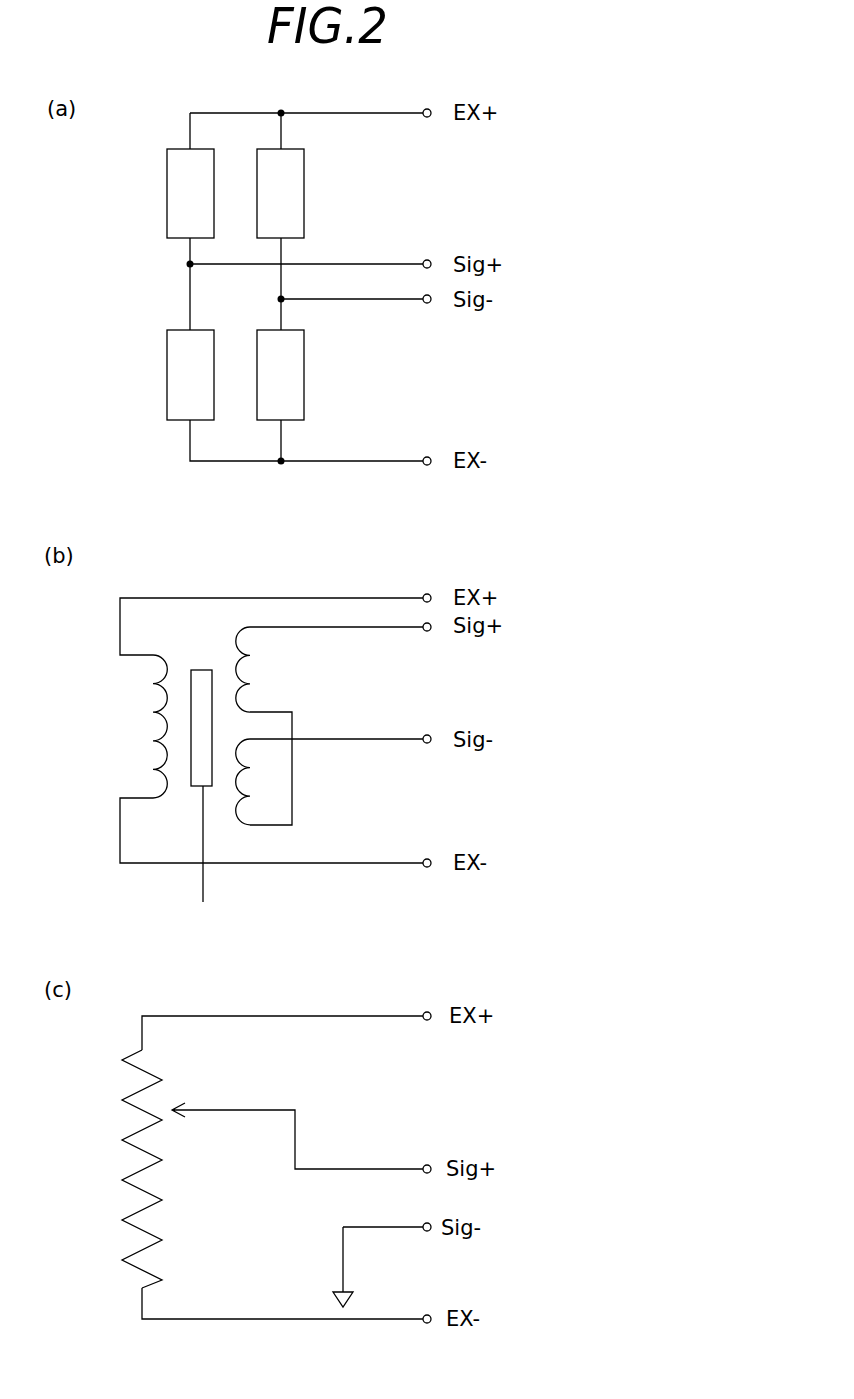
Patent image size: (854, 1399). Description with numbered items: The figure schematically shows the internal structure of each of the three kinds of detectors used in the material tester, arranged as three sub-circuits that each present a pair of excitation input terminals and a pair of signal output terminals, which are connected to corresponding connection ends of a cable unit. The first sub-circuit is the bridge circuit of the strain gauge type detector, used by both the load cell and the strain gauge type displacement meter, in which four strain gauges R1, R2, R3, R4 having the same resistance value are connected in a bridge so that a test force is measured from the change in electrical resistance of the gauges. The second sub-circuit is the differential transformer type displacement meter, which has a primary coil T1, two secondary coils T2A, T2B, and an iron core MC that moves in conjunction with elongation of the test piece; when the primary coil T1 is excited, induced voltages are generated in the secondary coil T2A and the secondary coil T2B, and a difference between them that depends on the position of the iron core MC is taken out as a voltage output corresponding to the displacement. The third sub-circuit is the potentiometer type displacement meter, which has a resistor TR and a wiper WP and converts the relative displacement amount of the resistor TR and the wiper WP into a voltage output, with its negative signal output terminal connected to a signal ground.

The strain gauge R1 is at (190, 193).
The strain gauge R2 is at (190, 375).
The strain gauge R3 is at (280, 375).
The strain gauge R4 is at (280, 193).
The iron core MC is at (203, 670).
The primary coil T1 is at (135, 726).
The secondary coil T2A is at (273, 669).
The secondary coil T2B is at (290, 782).
The resistor TR is at (121, 1169).
The wiper WP is at (297, 1124).